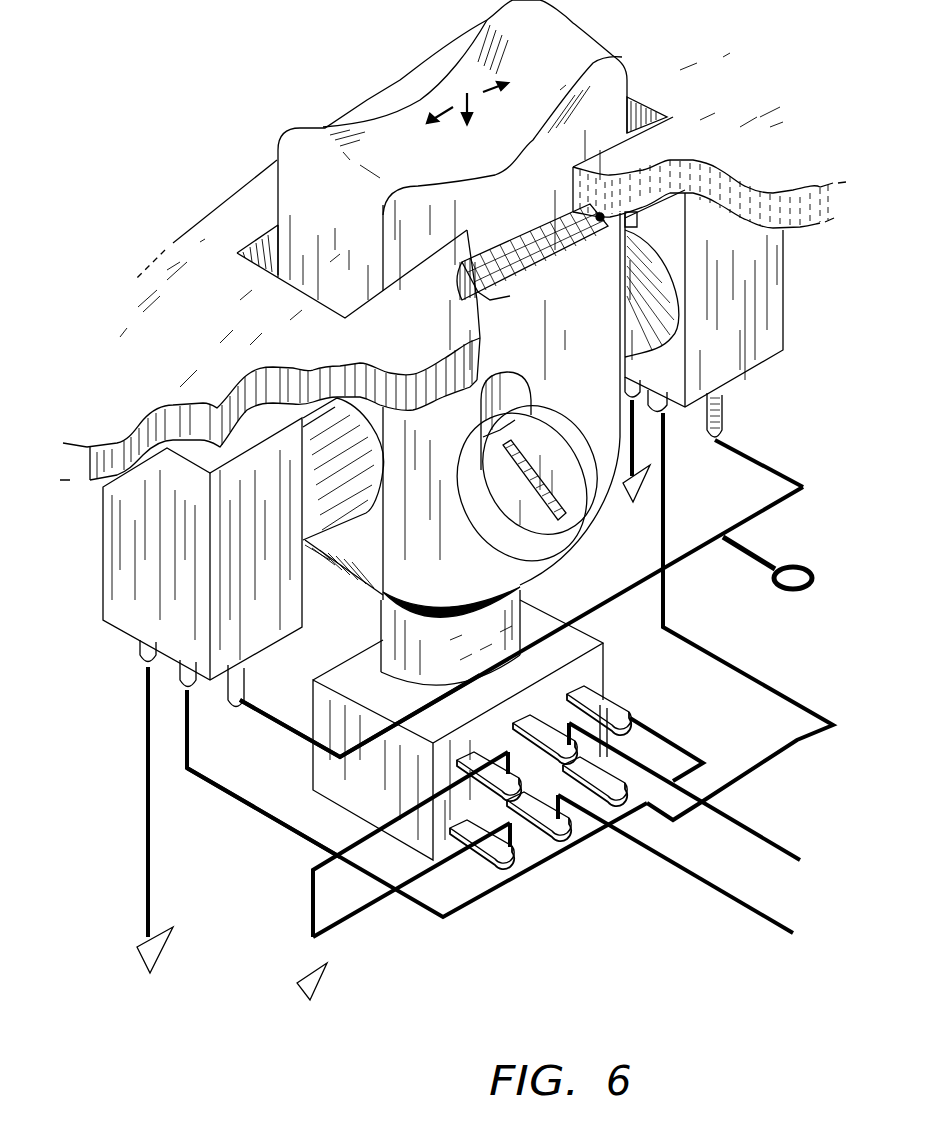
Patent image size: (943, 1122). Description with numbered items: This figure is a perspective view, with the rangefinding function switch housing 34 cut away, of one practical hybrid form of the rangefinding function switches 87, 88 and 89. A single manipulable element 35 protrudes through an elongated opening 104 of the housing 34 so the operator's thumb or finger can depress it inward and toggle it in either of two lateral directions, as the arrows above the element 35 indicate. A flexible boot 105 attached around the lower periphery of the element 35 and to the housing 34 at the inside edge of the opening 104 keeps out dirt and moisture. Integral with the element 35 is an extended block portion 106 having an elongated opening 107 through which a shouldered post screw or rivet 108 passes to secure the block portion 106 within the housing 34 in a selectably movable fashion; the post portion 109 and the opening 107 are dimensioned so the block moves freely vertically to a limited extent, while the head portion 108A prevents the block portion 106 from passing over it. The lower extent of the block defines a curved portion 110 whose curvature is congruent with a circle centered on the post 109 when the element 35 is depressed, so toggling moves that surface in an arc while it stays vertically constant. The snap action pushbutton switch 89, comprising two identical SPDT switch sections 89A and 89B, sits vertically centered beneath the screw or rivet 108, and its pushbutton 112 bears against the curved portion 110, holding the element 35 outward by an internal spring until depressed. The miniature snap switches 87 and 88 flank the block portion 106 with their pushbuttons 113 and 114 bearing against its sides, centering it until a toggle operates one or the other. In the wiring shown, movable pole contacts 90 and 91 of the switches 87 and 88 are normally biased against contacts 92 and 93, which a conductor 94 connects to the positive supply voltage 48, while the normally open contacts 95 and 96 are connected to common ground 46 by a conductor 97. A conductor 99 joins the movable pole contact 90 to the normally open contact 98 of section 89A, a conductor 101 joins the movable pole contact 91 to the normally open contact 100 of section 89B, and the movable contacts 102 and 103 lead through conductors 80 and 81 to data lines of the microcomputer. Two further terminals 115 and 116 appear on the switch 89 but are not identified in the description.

The rangefinding function switch housing 34 is at (232, 192).
The single manipulable element 35 is at (600, 55).
The elongated opening 104 is at (640, 103).
The flexible boot 105 is at (500, 240).
The extended block portion 106 is at (516, 300).
The elongated opening 107 is at (513, 378).
The shouldered post screw or rivet 108 is at (585, 428).
The head portion 108A is at (515, 558).
The post portion 109 is at (480, 432).
The curved portion 110 is at (362, 575).
The pushbutton 112 is at (520, 600).
The pushbutton 113 is at (380, 462).
The pushbutton 114 is at (665, 268).
The SPDT miniature momentary snap switch 88 is at (806, 303).
The SPDT miniature momentary snap switch 87 is at (280, 655).
The DPDT pushbutton momentary snap switch 89 is at (552, 878).
The SPDT switch section 89A is at (310, 725).
The SPDT switch section 89B is at (305, 757).
The movable pole contact 90 is at (178, 677).
The movable pole contact 91 is at (728, 458).
The contact 92 is at (226, 697).
The contact 93 is at (725, 398).
The conductor 94 is at (785, 505).
The normally open contact 95 is at (135, 652).
The normally open contact 96 is at (640, 440).
The conductor 97 is at (662, 470).
The common ground 46 is at (643, 492).
The positive supply voltage 48 is at (786, 566).
The normally open contact 98 is at (628, 708).
The conductor 99 is at (663, 736).
The normally open contact 100 is at (645, 762).
The conductor 101 is at (697, 640).
The movable pole contact 102 is at (550, 730).
The movable contact 103 is at (590, 822).
The terminal 115 is at (458, 753).
The terminal 116 is at (470, 810).
The conductor 80 is at (750, 832).
The conductor 81 is at (712, 890).